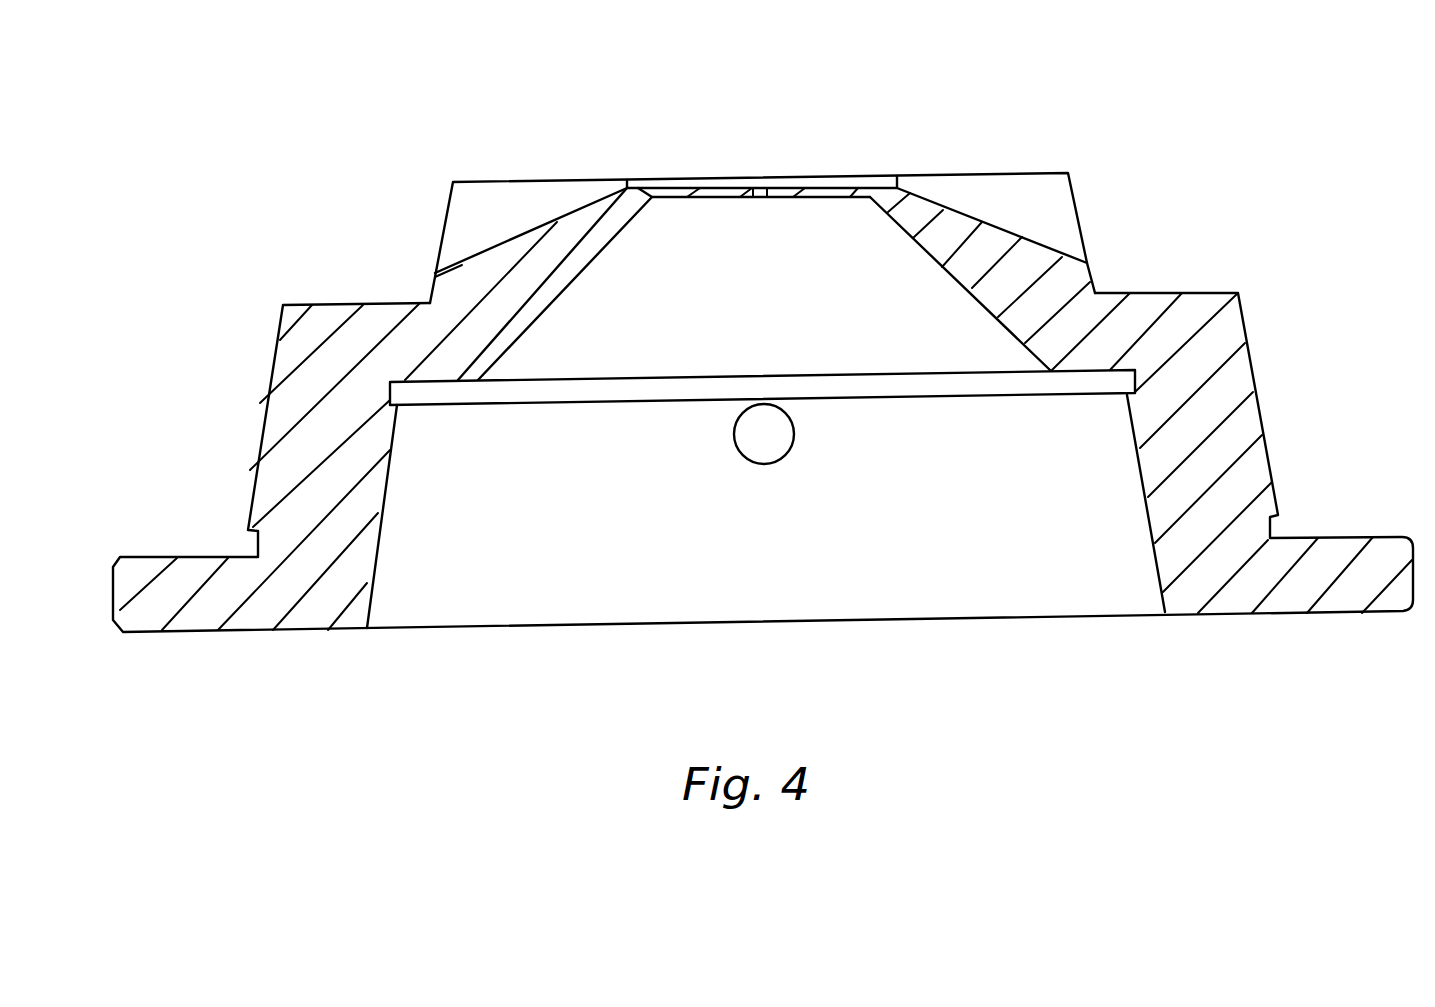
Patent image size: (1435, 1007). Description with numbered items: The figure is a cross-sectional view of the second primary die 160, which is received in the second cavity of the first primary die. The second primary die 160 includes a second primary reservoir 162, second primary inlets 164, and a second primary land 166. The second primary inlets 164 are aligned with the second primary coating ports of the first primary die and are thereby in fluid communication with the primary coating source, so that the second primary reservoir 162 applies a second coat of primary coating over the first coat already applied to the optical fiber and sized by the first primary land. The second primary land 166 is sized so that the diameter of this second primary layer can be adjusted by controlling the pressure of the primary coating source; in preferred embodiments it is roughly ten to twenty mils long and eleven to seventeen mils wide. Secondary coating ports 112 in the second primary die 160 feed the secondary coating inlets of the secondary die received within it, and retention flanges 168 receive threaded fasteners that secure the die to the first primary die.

The second primary die 160 is at (988, 92).
The second primary reservoir 162 is at (675, 178).
The second primary inlets 164 is at (477, 213).
The second primary land 166 is at (763, 198).
The retention flanges 168 is at (1392, 600).
The secondary coating ports 112 is at (773, 437).